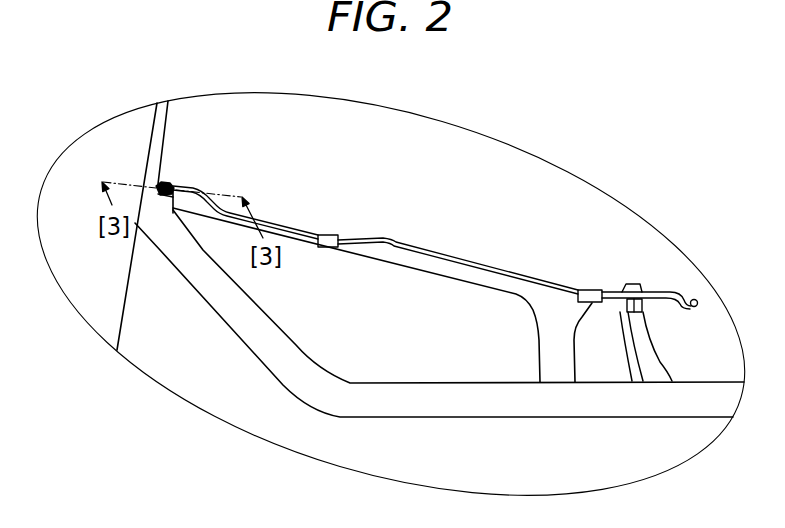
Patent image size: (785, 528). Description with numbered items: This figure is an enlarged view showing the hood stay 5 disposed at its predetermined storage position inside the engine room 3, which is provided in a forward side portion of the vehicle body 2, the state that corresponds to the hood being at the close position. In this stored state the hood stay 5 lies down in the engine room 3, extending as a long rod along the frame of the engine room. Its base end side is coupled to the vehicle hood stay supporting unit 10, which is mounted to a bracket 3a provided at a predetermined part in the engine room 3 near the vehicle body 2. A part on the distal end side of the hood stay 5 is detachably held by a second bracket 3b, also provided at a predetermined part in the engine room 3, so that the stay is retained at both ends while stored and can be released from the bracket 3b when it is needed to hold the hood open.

The vehicle body 2 is at (152, 153).
The engine room 3 is at (522, 193).
The bracket 3a is at (166, 199).
The bracket 3b is at (657, 380).
The hood stay 5 is at (427, 250).
The vehicle hood stay supporting unit 10 is at (170, 174).